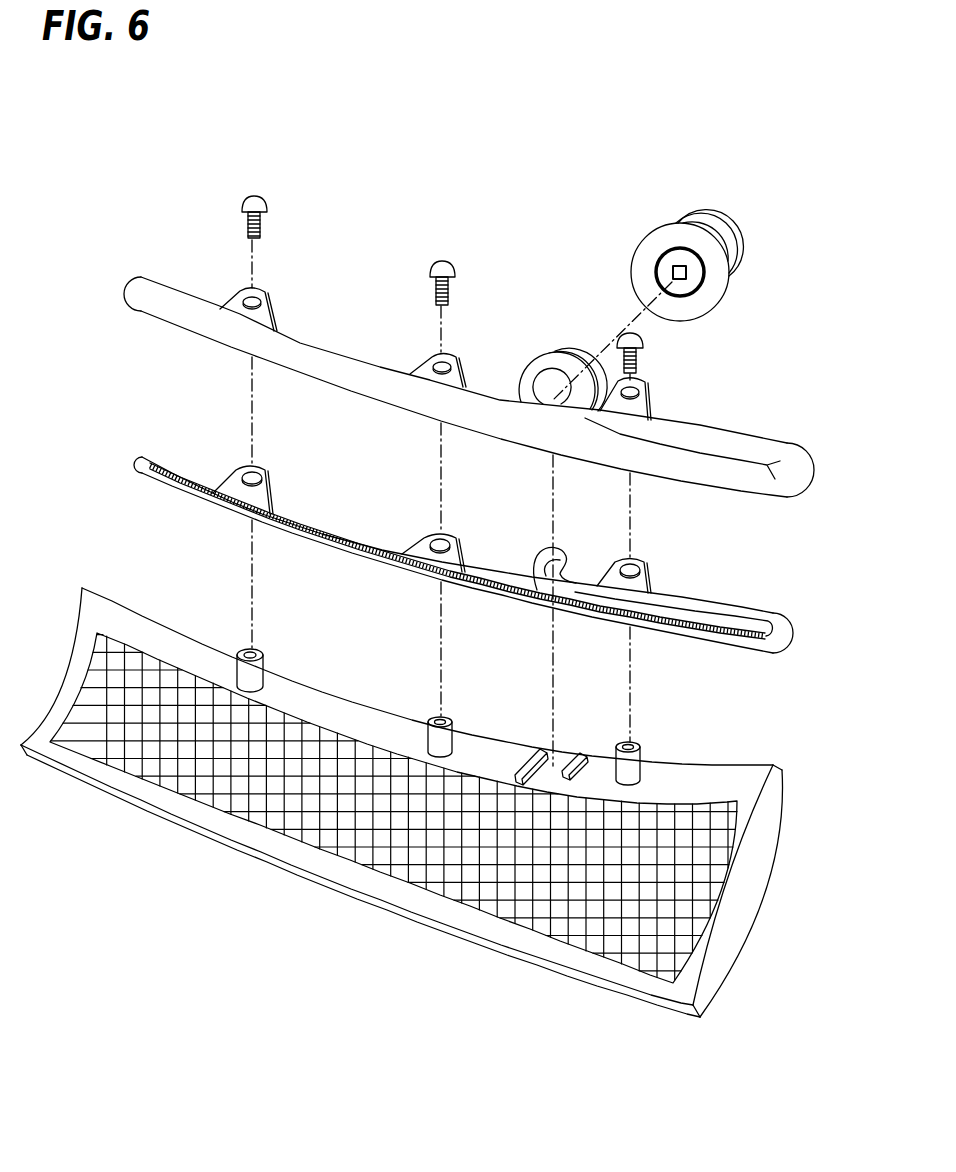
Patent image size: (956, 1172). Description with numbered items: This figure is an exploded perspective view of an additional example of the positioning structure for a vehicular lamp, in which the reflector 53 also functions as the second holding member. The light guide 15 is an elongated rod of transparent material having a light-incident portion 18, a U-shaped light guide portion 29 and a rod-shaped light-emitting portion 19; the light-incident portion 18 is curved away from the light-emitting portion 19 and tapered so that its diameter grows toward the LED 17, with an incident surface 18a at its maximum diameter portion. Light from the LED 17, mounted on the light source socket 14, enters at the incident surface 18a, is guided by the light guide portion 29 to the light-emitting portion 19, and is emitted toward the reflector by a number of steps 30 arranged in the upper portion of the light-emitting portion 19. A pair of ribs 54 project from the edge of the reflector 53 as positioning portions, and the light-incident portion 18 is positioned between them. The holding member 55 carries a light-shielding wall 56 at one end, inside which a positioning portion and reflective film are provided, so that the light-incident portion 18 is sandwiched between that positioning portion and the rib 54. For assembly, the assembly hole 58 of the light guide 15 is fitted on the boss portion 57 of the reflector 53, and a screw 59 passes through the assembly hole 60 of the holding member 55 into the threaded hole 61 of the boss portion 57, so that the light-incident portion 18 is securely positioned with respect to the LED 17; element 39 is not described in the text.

The light source socket 14 is at (707, 212).
The light guide 15 is at (330, 535).
The LED 17 is at (672, 274).
The light-incident portion 18 is at (546, 549).
The incident surface 18a is at (566, 556).
The light-emitting portion 19 is at (347, 555).
The U-shaped light guide portion 29 is at (778, 620).
The steps 30 is at (372, 560).
The grip rod 39 is at (328, 352).
The reflector 53 is at (132, 608).
The rib 54 is at (536, 748).
The holding member 55 is at (718, 428).
The light-shielding wall 56 is at (560, 352).
The boss portion 57 is at (265, 660).
The assembly hole 58 is at (252, 470).
The screw 59 is at (254, 200).
The assembly hole 60 is at (252, 292).
The threaded hole 61 is at (248, 648).